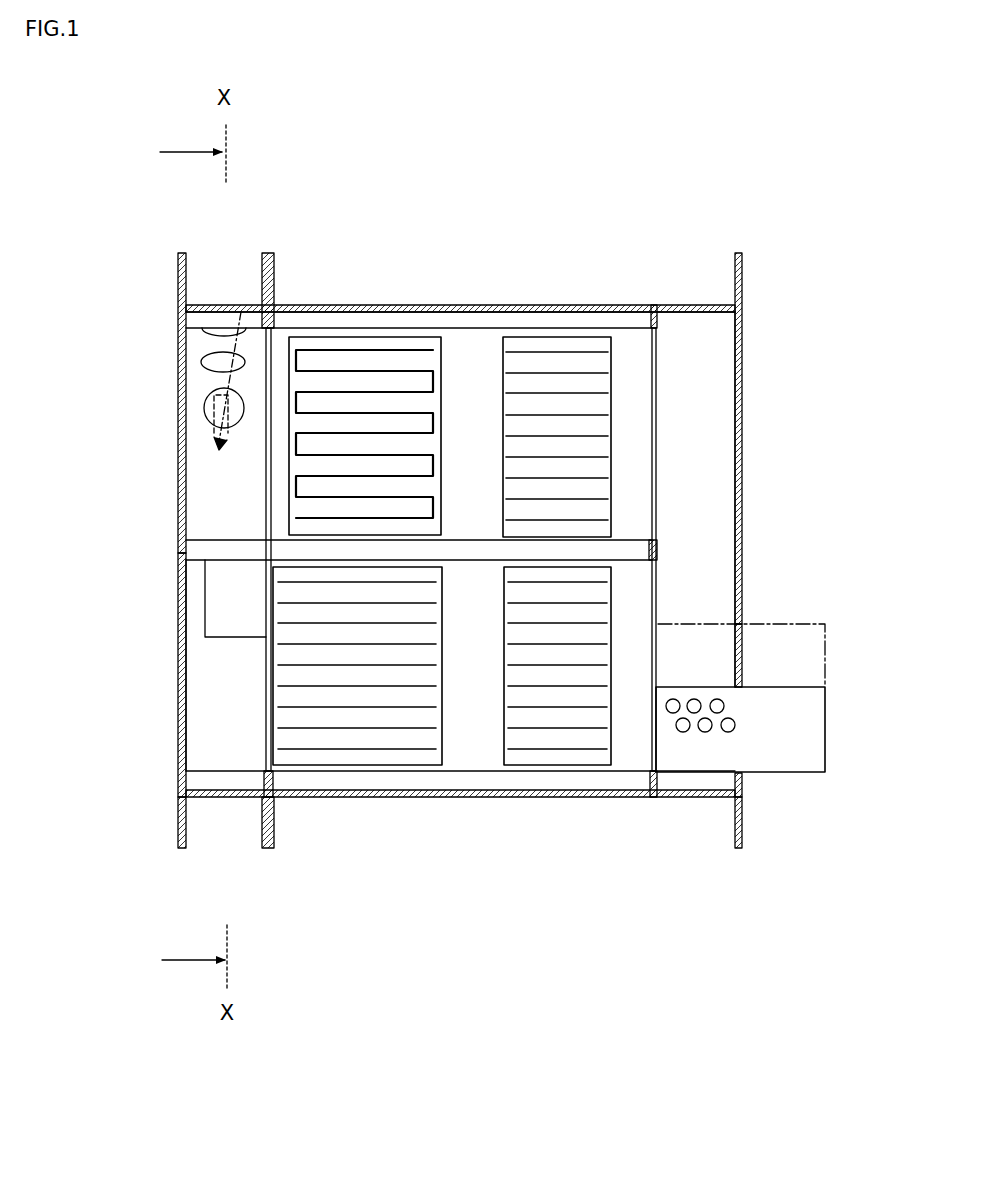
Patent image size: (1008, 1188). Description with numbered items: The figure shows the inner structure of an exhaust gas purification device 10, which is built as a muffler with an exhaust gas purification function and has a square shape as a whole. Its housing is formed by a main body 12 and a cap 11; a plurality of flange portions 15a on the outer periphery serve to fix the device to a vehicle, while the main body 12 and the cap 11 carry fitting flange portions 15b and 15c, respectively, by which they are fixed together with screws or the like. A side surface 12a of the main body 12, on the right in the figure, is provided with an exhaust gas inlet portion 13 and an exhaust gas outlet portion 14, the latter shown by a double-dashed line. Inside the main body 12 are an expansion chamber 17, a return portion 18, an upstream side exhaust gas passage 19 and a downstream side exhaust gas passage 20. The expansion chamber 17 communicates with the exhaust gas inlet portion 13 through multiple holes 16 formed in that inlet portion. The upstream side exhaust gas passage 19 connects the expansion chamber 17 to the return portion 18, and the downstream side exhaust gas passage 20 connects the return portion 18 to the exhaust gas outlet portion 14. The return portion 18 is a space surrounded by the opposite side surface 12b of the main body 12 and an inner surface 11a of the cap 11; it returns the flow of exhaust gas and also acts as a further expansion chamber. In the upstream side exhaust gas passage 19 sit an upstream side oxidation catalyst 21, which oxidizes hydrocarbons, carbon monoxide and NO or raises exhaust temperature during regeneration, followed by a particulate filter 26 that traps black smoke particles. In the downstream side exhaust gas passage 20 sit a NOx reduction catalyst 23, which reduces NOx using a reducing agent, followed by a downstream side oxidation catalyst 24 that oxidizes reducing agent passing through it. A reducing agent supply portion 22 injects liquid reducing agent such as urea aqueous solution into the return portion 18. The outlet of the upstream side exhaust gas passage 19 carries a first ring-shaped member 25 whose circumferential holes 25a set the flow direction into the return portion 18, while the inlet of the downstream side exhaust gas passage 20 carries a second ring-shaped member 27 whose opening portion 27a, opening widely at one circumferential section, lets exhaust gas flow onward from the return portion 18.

The exhaust gas purification device 10 is at (752, 170).
The cap 11 is at (178, 345).
The inner surface of the cap 11a is at (200, 714).
The main body 12 is at (368, 304).
The side surface of the main body 12a is at (748, 487).
The side surface of the main body 12b is at (251, 503).
The exhaust gas inlet portion 13 is at (781, 748).
The exhaust gas outlet portion 14 is at (790, 624).
The flange portions 15a is at (181, 817).
The fitting flange portion 15b is at (262, 830).
The fitting flange portion 15c is at (278, 836).
The holes 16 is at (707, 732).
The expansion chamber 17 is at (716, 387).
The return portion 18 is at (213, 547).
The upstream side exhaust gas passage 19 is at (466, 330).
The downstream side exhaust gas passage 20 is at (474, 771).
The upstream side oxidation catalyst 21 is at (558, 345).
The reducing agent supply portion 22 is at (240, 300).
The NOx reduction catalyst 23 is at (364, 740).
The downstream side oxidation catalyst 24 is at (562, 740).
The first ring-shaped member 25 is at (208, 460).
The holes 25a is at (205, 400).
The particulate filter 26 is at (394, 340).
The second ring-shaped member 27 is at (210, 664).
The opening portion 27a is at (210, 605).